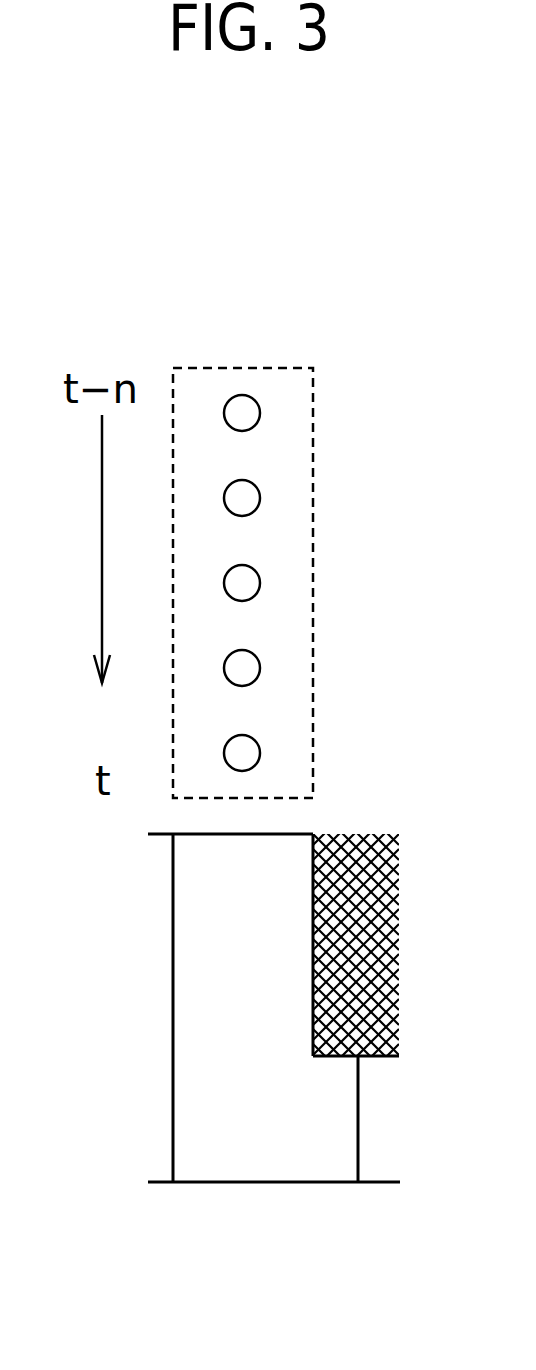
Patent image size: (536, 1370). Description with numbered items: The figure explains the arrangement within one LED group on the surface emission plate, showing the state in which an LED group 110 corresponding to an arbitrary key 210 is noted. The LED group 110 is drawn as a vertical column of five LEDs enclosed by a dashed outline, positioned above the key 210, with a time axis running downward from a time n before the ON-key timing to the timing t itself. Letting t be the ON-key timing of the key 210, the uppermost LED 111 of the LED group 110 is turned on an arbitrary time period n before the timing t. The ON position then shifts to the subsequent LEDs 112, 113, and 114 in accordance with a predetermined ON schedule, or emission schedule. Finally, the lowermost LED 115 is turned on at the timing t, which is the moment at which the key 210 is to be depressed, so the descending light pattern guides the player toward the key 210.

The LED group 110 is at (249, 368).
The uppermost LED 111 is at (260, 414).
The LED 112 is at (260, 499).
The LED 113 is at (260, 584).
The LED 114 is at (260, 669).
The lowermost LED 115 is at (260, 754).
The key 210 is at (268, 1143).